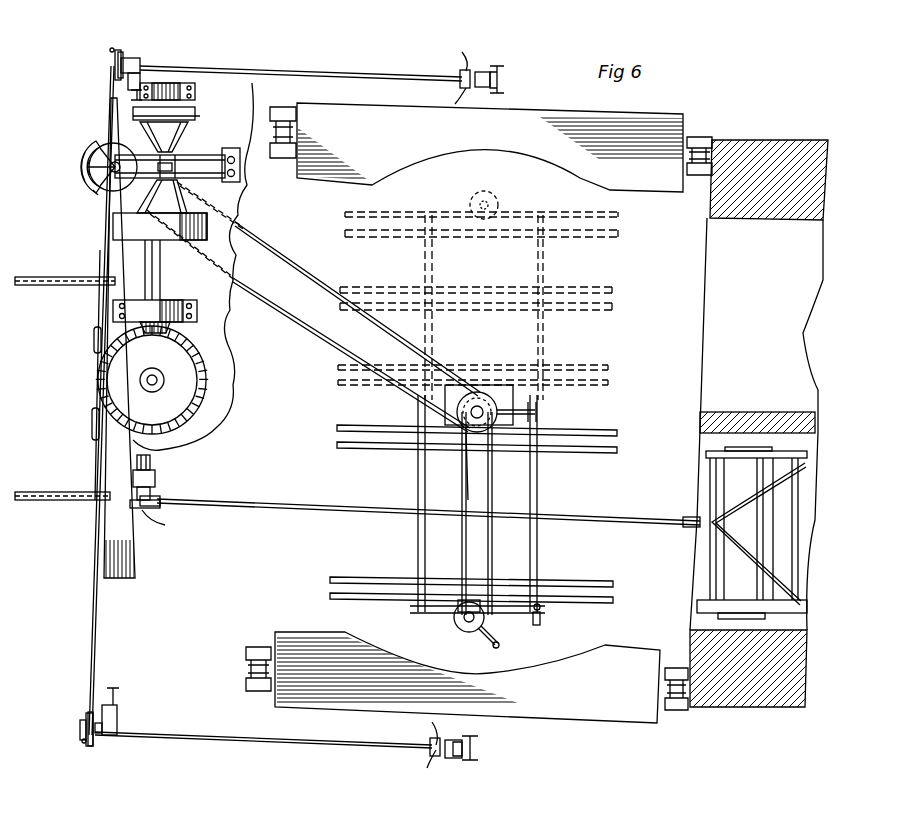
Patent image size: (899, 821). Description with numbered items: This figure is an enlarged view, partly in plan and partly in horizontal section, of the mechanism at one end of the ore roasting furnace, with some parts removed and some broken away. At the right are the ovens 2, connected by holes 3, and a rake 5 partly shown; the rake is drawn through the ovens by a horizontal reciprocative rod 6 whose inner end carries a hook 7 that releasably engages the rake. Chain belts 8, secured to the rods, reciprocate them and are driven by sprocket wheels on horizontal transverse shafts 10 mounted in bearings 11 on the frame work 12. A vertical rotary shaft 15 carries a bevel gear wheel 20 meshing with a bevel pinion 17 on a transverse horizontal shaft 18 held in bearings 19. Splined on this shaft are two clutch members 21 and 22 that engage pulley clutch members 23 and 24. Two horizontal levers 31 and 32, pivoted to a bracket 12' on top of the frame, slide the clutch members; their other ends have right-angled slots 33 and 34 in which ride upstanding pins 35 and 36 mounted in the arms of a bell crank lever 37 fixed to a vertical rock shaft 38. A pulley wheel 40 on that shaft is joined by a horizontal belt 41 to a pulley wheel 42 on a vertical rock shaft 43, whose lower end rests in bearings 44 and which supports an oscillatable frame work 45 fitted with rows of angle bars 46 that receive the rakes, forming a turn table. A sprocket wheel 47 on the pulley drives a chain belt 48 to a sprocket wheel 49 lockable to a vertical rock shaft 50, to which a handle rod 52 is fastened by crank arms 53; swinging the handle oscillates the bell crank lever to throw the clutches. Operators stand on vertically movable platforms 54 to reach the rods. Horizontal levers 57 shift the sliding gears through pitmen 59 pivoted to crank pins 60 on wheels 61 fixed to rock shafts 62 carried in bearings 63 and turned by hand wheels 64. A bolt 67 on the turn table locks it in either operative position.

The ovens 2 is at (710, 381).
The holes 3 is at (770, 450).
The rake 5 is at (755, 540).
The horizontal reciprocative rods 6 is at (74, 278).
The hook 7 is at (708, 520).
The chain belts 8 is at (78, 286).
The horizontal transverse shafts 10 is at (151, 464).
The bearings 11 is at (156, 481).
The frame work 12 is at (408, 409).
The bracket 12' is at (234, 154).
The vertical rotary shafts 15 is at (153, 369).
The bevel pinions 17 is at (172, 327).
The transverse horizontal shaft 18 is at (161, 279).
The bearings 19 is at (196, 92).
The bevel gear wheels 20 is at (198, 392).
The clutch member 21 is at (183, 130).
The clutch member 22 is at (180, 200).
The pulley clutch member 23 is at (196, 118).
The pulley clutch member 24 is at (195, 238).
The horizontal lever 31 is at (170, 157).
The horizontal lever 32 is at (175, 168).
The right-angled slot 33 is at (90, 152).
The right-angled slot 34 is at (86, 186).
The upstanding pin 35 is at (96, 142).
The upstanding pin 36 is at (94, 196).
The bell crank lever 37 is at (88, 168).
The vertical rock shaft 38 is at (88, 178).
The pulley wheel 40 is at (116, 158).
The horizontal belt 41 is at (290, 258).
The pulley wheel 42 is at (482, 405).
The vertical rock shaft 43 is at (485, 411).
The bearings 44 is at (500, 398).
The oscillatable frame work 45 is at (536, 475).
The angle bars 46 is at (605, 506).
The sprocket wheel 47 is at (470, 440).
The chain belt 48 is at (490, 503).
The sprocket wheel 49 is at (462, 612).
The vertical rock shaft 50 is at (463, 630).
The handle rod 52 is at (498, 648).
The crank arms 53 is at (472, 632).
The vertically movable platform 54 is at (580, 120).
The horizontal lever 57 is at (97, 356).
The pitman 59 is at (98, 318).
The crank pin 60 is at (114, 64).
The wheel 61 is at (121, 55).
The rock shaft 62 is at (112, 50).
The bearings 63 is at (138, 63).
The hand wheel 64 is at (461, 58).
The bolt 67 is at (543, 618).